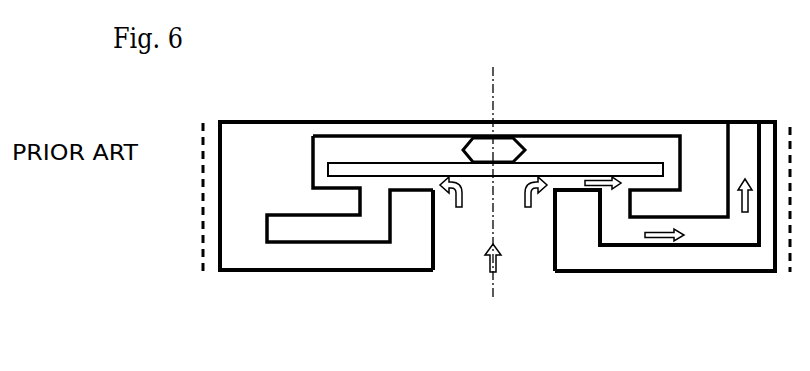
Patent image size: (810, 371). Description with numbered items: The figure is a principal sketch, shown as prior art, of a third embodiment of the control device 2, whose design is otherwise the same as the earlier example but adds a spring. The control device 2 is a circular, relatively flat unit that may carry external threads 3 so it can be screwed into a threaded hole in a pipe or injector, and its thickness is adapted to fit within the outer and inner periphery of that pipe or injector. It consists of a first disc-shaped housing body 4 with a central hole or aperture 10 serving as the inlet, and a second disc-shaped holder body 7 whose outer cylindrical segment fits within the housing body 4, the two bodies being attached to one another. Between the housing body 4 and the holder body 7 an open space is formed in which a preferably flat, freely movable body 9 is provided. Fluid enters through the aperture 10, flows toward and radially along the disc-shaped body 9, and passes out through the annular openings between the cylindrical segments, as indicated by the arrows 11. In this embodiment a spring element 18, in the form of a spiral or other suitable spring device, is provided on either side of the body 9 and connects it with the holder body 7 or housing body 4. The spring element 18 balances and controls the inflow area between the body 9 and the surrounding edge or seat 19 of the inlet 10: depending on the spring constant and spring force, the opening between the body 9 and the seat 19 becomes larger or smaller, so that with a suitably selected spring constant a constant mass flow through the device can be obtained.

The control device 2 is at (296, 291).
The external threads 3 is at (788, 132).
The first disc-shaped housing body 4 is at (620, 263).
The second disc-shaped holder body 7 is at (373, 122).
The freely movable body 9 is at (418, 170).
The central hole or aperture 10 is at (463, 215).
The arrows 11 is at (494, 273).
The spring element 18 is at (508, 150).
The surrounding edge or seat 19 is at (560, 193).